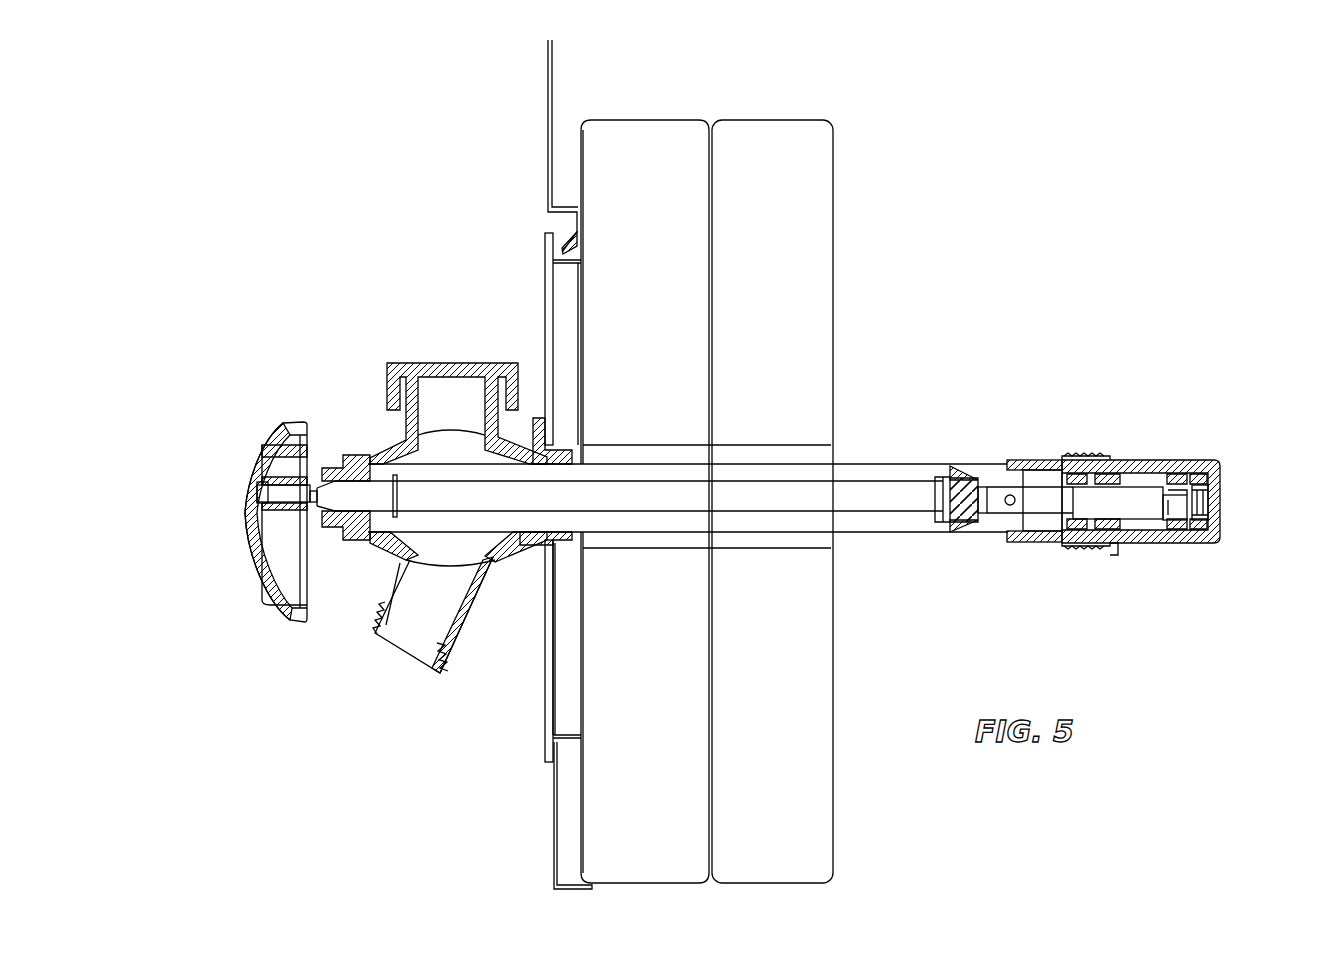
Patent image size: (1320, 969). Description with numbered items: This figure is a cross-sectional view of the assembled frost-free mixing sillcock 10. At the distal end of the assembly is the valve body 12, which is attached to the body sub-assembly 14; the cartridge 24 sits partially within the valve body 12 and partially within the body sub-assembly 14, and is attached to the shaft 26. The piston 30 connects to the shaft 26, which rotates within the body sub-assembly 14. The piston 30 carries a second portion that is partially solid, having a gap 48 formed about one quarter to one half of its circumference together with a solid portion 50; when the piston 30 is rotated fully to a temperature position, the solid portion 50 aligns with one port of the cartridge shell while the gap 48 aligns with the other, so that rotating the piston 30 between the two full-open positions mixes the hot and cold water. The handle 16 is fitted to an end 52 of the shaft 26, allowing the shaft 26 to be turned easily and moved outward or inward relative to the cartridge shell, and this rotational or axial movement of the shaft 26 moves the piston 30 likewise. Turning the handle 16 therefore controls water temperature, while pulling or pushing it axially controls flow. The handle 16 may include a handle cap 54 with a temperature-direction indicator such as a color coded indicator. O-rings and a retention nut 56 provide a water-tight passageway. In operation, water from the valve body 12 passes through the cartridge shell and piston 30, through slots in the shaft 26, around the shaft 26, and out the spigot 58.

The frost-free mixing sillcock 10 is at (505, 328).
The valve body 12 is at (1213, 493).
The body sub-assembly 14 is at (660, 533).
The handle 16 is at (262, 456).
The cartridge 24 is at (1117, 473).
The shaft 26 is at (757, 500).
The piston 30 is at (1127, 500).
The gap 48 is at (1182, 510).
The solid portion 50 is at (1180, 497).
The end 52 is at (343, 503).
The handle cap 54 is at (250, 537).
The retention nut 56 is at (350, 450).
The spigot 58 is at (463, 617).